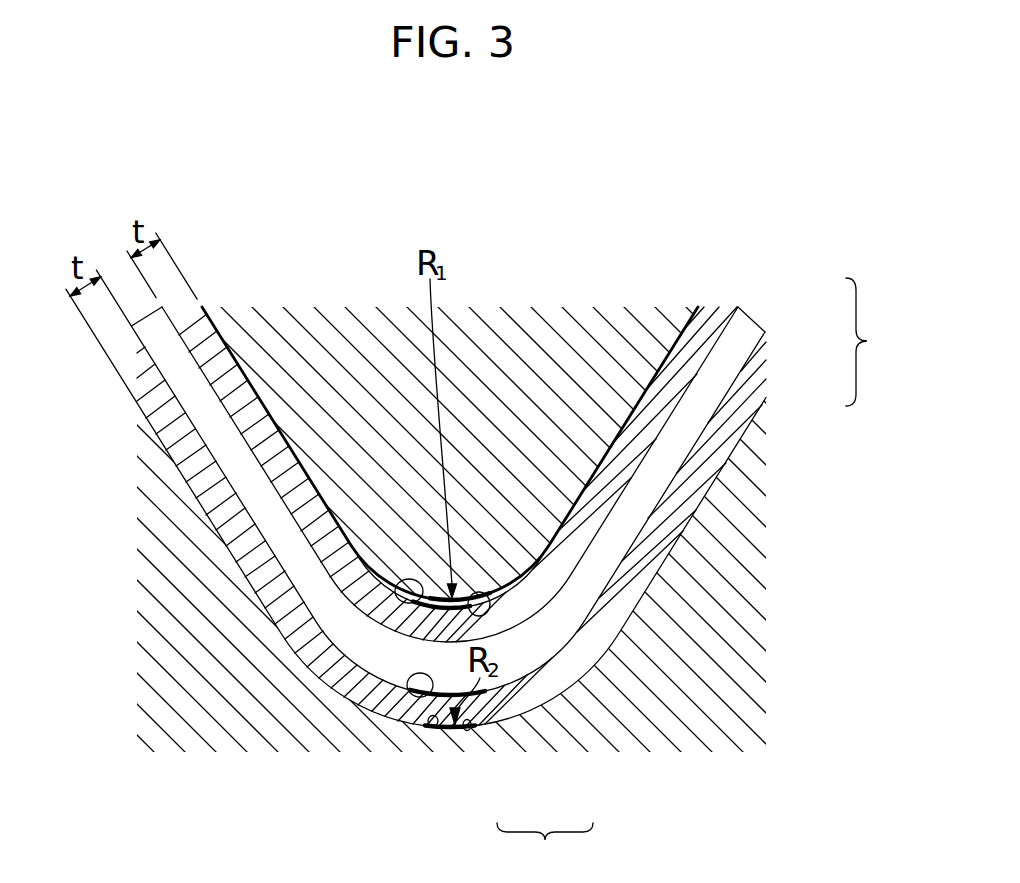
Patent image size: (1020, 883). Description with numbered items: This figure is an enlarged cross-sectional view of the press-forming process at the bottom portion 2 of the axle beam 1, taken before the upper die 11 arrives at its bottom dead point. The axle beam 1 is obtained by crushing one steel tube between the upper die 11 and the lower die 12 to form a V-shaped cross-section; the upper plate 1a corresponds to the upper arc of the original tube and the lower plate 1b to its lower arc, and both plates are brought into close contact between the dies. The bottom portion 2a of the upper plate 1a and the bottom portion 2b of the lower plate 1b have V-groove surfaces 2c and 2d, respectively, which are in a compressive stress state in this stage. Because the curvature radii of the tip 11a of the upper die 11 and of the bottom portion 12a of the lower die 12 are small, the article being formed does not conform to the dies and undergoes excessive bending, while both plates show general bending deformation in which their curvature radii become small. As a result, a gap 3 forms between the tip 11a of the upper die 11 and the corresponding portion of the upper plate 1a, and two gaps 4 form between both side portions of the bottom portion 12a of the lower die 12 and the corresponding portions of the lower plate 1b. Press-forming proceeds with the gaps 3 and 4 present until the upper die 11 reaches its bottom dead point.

The axle beam 1 is at (509, 460).
The upper plate 1a is at (717, 309).
The lower plate 1b is at (728, 420).
The bottom portion 2 is at (545, 849).
The bottom portion of the upper plate 2a is at (502, 623).
The bottom portion of the lower plate 2b is at (470, 729).
The V-groove surface 2c is at (396, 592).
The V-groove surface 2d is at (412, 680).
The gap 3 is at (443, 597).
The gap 4 is at (313, 668).
The upper die 11 is at (493, 317).
The tip of the upper die 11a is at (487, 600).
The lower die 12 is at (745, 582).
The bottom portion of the lower die 12a is at (433, 727).